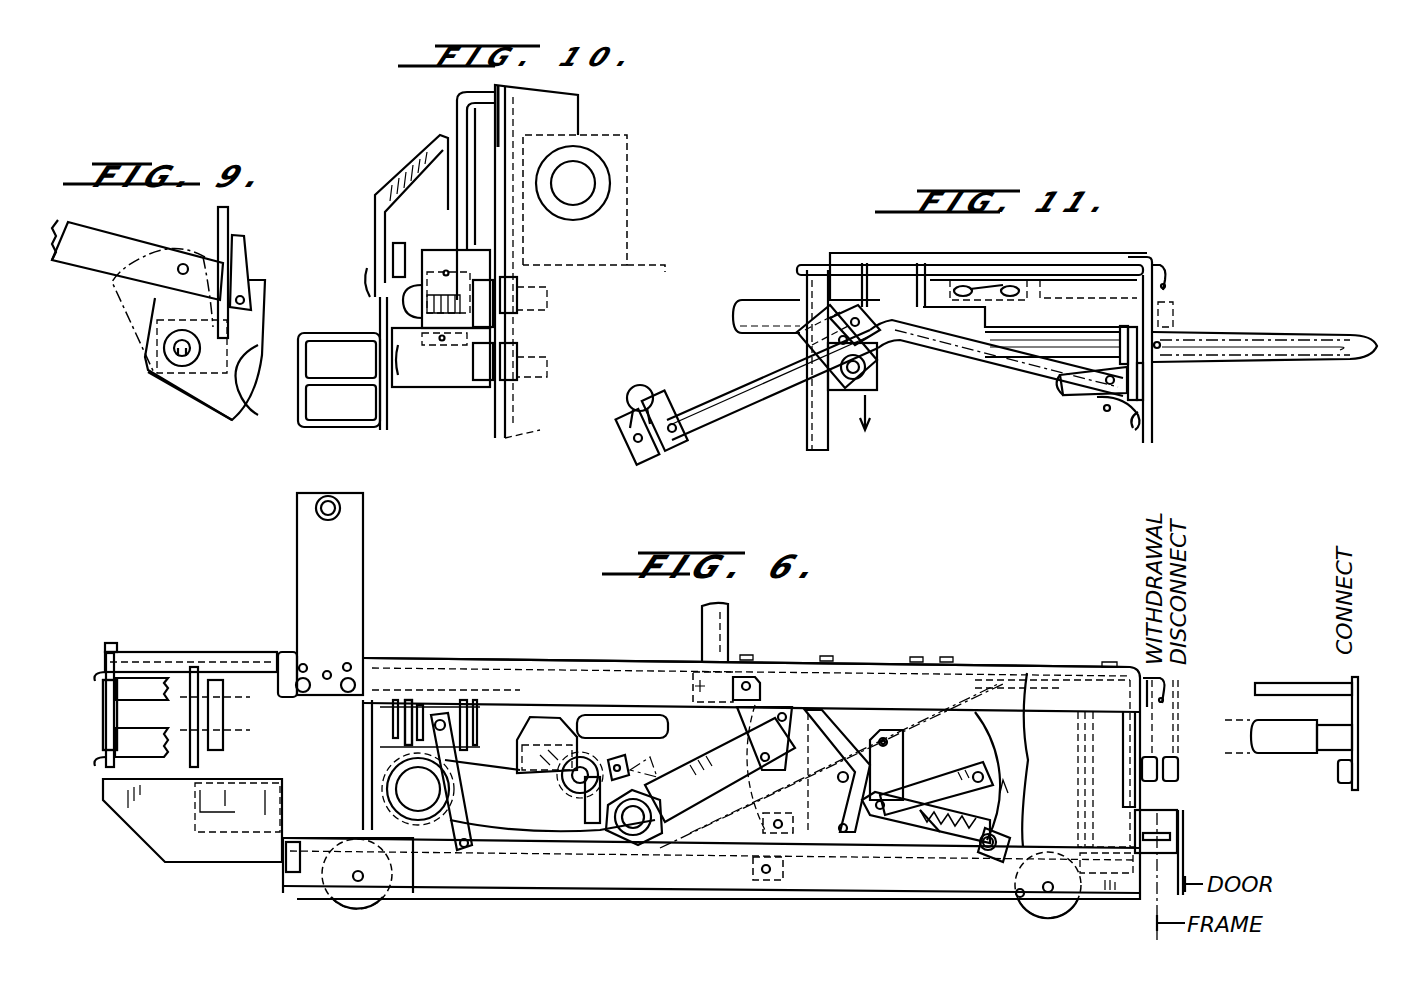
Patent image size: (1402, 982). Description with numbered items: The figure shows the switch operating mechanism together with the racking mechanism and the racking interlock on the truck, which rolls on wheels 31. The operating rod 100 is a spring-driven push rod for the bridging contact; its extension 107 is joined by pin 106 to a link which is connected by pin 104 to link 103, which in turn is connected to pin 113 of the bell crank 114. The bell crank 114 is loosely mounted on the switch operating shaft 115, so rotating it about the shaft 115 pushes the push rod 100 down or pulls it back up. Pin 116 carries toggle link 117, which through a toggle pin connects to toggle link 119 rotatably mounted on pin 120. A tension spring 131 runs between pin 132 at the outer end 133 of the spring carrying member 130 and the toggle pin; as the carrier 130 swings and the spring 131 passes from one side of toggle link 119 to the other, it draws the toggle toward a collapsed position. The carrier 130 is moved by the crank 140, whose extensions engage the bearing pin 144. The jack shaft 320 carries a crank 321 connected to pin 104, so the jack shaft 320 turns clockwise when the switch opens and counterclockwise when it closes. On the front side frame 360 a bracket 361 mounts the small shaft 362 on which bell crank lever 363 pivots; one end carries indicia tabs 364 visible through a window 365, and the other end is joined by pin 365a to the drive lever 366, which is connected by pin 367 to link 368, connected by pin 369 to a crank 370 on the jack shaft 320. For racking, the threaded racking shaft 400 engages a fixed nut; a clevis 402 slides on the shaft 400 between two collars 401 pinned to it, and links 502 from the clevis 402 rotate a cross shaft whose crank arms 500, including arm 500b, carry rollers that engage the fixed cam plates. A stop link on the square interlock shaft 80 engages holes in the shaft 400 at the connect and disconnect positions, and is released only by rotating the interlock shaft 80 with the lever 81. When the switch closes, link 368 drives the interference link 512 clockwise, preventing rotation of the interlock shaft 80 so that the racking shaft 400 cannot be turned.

In FIG. 6, the wheels 31 is at (373, 895).
In FIG. 11, the square interlock shaft 80 is at (1090, 266).
In FIG. 6, the square interlock shaft 80 is at (243, 657).
In FIG. 6, the lever 81 is at (1354, 780).
In FIG. 6, the operating rod 100 is at (730, 638).
In FIG. 6, the link 103 is at (820, 713).
In FIG. 6, the pin 104 is at (788, 803).
In FIG. 6, the pin 106 is at (760, 680).
In FIG. 6, the extension 107 is at (693, 688).
In FIG. 6, the pin 113 is at (780, 713).
In FIG. 6, the bell crank 114 is at (872, 742).
In FIG. 6, the shaft 115 is at (883, 738).
In FIG. 6, the pin 116 is at (840, 833).
In FIG. 6, the toggle link 117 is at (883, 815).
In FIG. 6, the toggle link 119 is at (1010, 797).
In FIG. 6, the pin 120 is at (1024, 758).
In FIG. 6, the spring carrying member 130 is at (1013, 840).
In FIG. 6, the tension spring 131 is at (930, 832).
In FIG. 6, the pin 132 is at (990, 855).
In FIG. 6, the outer end 133 is at (1003, 893).
In FIG. 6, the crank 140 is at (908, 780).
In FIG. 6, the bearing pin 144 is at (923, 787).
In FIG. 11, the jack shaft 320 is at (643, 372).
In FIG. 6, the jack shaft 320 is at (633, 840).
In FIG. 6, the crank 321 is at (712, 757).
In FIG. 9, the front side frame 360 is at (230, 215).
In FIG. 11, the front side frame 360 is at (1150, 375).
In FIG. 6, the front side frame 360 is at (1140, 793).
In FIG. 9, the bracket 361 is at (250, 337).
In FIG. 9, the small shaft 362 is at (185, 363).
In FIG. 10, the small shaft 362 is at (400, 350).
In FIG. 11, the small shaft 362 is at (1103, 410).
In FIG. 9, the bell crank lever 363 is at (205, 410).
In FIG. 10, the bell crank lever 363 is at (336, 410).
In FIG. 11, the bell crank lever 363 is at (1113, 417).
In FIG. 9, the indicia tabs 364 is at (263, 347).
In FIG. 9, the window 365 is at (258, 416).
In FIG. 11, the window 365 is at (1135, 432).
In FIG. 9, the pin 365a is at (200, 232).
In FIG. 11, the pin 365a is at (1090, 373).
In FIG. 9, the drive lever 366 is at (110, 284).
In FIG. 11, the drive lever 366 is at (990, 363).
In FIG. 11, the pin 367 is at (817, 367).
In FIG. 11, the link 368 is at (710, 423).
In FIG. 11, the pin 369 is at (670, 433).
In FIG. 11, the crank 370 is at (667, 410).
In FIG. 6, the racking shaft 400 is at (315, 735).
In FIG. 6, the collars 401 is at (480, 713).
In FIG. 6, the clevis 402 is at (443, 717).
In FIG. 6, the crank arms 500 is at (329, 594).
In FIG. 6, the crank arm 500b is at (543, 820).
In FIG. 6, the links 502 is at (360, 755).
In FIG. 11, the interference link 512 is at (803, 307).